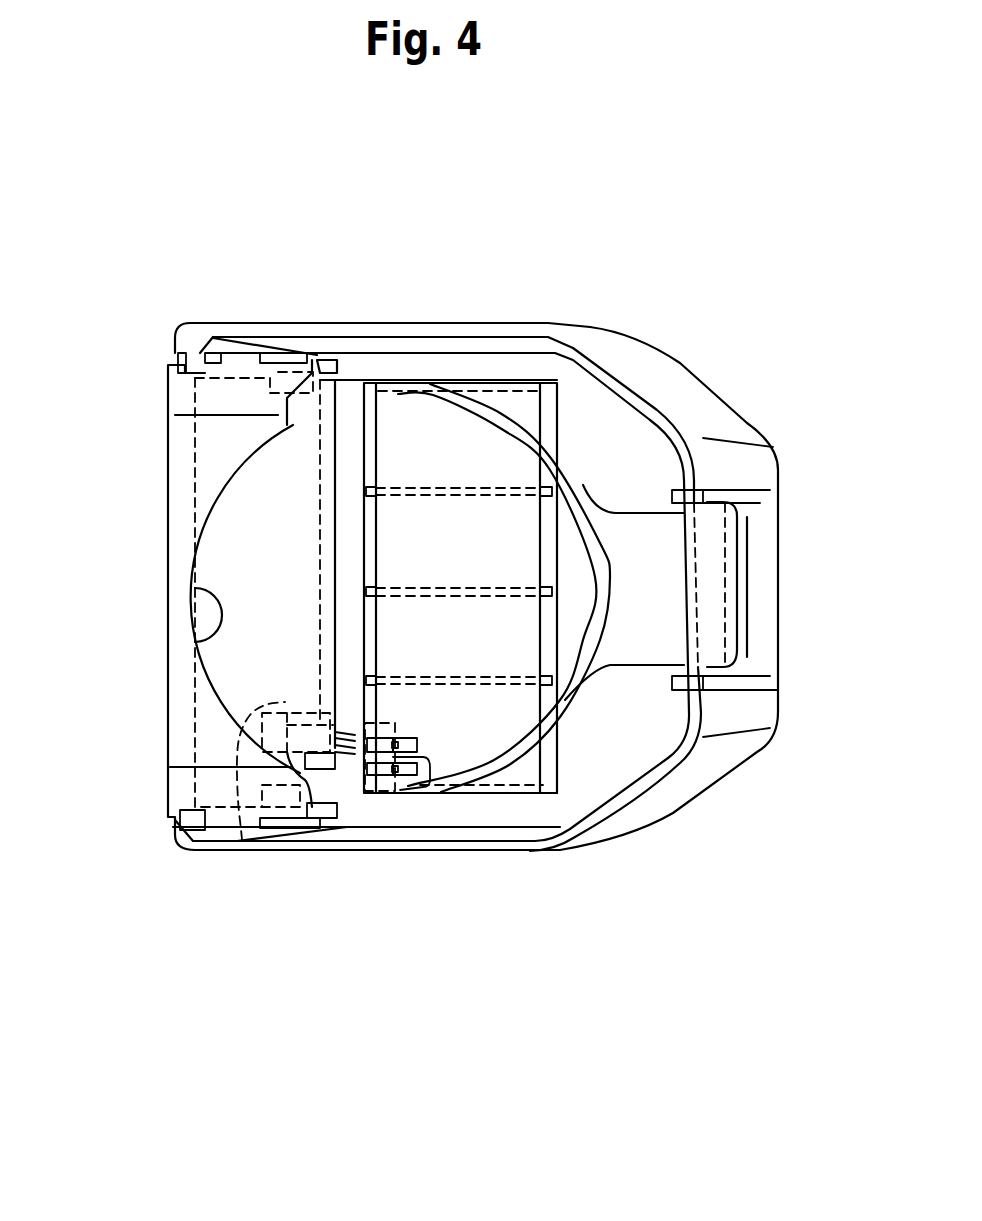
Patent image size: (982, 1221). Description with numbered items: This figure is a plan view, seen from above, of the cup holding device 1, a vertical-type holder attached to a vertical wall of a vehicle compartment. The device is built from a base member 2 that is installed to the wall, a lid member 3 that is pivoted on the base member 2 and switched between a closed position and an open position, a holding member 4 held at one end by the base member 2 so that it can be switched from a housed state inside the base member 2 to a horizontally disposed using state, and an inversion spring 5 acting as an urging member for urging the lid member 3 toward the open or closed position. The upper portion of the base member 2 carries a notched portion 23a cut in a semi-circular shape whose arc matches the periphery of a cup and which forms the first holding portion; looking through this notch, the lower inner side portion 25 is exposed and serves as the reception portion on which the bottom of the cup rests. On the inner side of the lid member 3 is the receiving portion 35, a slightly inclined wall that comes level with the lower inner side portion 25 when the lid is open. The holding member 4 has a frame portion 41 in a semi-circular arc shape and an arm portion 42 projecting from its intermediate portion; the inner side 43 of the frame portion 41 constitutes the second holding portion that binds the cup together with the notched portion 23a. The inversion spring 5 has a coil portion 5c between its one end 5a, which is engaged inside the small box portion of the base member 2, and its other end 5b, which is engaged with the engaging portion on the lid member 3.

The cup holding device 1 is at (384, 165).
The base member 2 is at (247, 393).
The lid member 3 is at (355, 323).
The holding member 4 is at (352, 380).
The inversion spring 5 is at (388, 928).
The one end of the inversion spring 5a is at (242, 840).
The other end of the inversion spring 5b is at (428, 760).
The coil portion 5c is at (337, 753).
The notched portion 23a is at (215, 633).
The lower inner side portion 25 is at (253, 516).
The receiving portion 35 is at (523, 407).
The frame portion 41 is at (503, 763).
The arm portion 42 is at (634, 647).
The inner side of the frame portion 43 is at (569, 503).